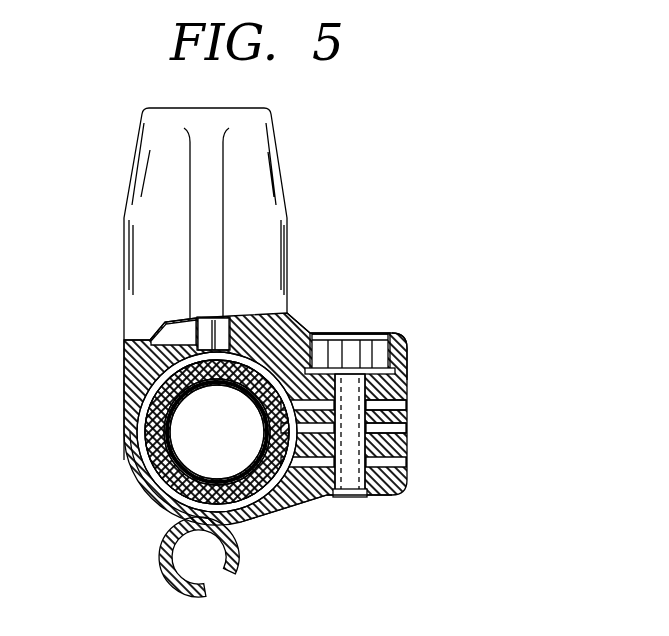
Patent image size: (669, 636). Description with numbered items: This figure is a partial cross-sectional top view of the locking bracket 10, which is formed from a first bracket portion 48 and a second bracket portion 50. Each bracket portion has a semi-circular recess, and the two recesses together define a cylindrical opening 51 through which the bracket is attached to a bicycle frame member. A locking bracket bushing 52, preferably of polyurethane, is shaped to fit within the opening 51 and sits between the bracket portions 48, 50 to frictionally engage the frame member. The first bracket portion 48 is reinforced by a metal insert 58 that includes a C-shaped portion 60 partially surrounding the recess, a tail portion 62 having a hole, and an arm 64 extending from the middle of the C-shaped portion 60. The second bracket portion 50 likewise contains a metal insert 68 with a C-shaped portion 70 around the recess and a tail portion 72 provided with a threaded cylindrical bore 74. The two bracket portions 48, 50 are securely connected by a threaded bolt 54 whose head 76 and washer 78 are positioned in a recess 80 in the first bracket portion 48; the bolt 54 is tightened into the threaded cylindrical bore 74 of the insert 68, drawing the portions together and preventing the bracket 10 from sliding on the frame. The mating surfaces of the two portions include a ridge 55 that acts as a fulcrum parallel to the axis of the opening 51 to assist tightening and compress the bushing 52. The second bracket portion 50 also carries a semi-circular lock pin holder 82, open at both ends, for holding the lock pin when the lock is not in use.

The locking bracket 10 is at (300, 135).
The first bracket portion 48 is at (285, 205).
The second bracket portion 50 is at (145, 487).
The opening 51 is at (156, 497).
The locking bracket bushing 52 is at (130, 435).
The threaded bolt 54 is at (405, 413).
The ridge 55 is at (393, 435).
The metal insert 58 is at (148, 352).
The C-shaped portion 60 is at (128, 410).
The tail portion 62 is at (340, 367).
The arm 64 is at (208, 333).
The metal insert 68 is at (193, 455).
The C-shaped portion 70 is at (252, 515).
The tail portion 72 is at (310, 490).
The threaded cylindrical bore 74 is at (350, 494).
The bolt head 76 is at (372, 333).
The washer 78 is at (402, 366).
The recess 80 is at (322, 378).
The lock pin holder 82 is at (170, 585).